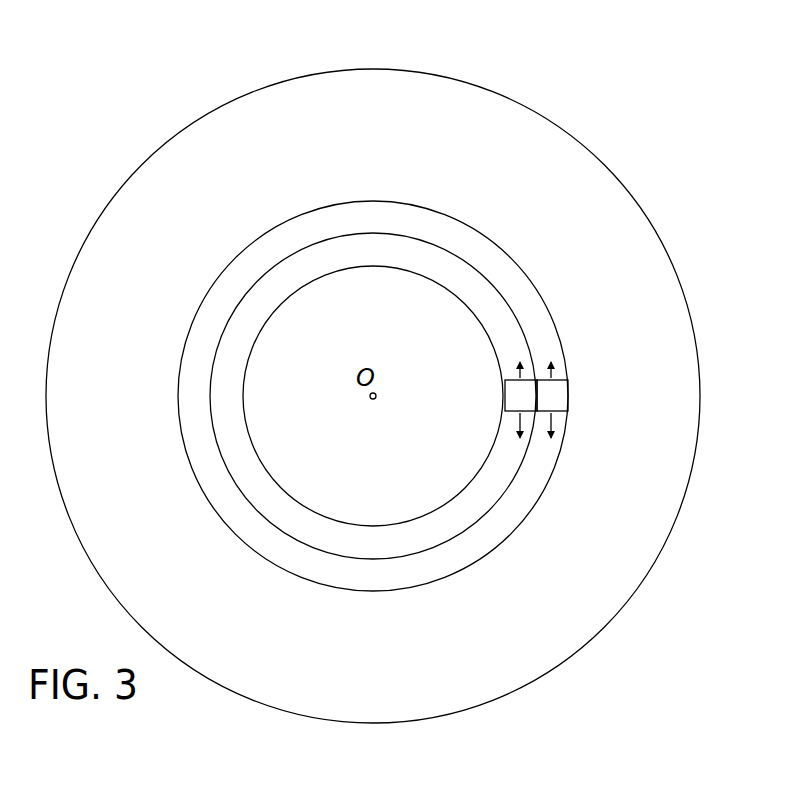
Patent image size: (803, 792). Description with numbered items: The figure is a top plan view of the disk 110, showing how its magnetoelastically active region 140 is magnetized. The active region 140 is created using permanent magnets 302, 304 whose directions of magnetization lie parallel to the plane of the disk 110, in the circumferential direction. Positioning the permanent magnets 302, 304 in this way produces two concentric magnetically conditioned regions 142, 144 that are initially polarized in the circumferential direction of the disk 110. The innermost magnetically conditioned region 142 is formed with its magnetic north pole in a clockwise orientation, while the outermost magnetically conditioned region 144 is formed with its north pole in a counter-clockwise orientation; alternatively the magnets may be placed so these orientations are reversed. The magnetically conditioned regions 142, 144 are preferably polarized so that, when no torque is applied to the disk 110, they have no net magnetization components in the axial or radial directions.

The disk 110 is at (567, 102).
The magnetoelastically active region 140 is at (551, 281).
The innermost magnetically conditioned region 142 is at (435, 525).
The outermost magnetically conditioned region 144 is at (523, 500).
The permanent magnet 302 is at (525, 392).
The permanent magnet 304 is at (552, 397).